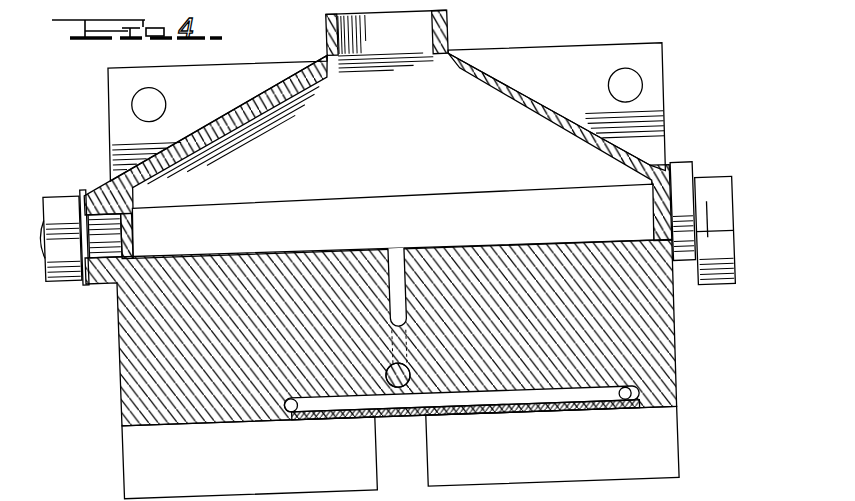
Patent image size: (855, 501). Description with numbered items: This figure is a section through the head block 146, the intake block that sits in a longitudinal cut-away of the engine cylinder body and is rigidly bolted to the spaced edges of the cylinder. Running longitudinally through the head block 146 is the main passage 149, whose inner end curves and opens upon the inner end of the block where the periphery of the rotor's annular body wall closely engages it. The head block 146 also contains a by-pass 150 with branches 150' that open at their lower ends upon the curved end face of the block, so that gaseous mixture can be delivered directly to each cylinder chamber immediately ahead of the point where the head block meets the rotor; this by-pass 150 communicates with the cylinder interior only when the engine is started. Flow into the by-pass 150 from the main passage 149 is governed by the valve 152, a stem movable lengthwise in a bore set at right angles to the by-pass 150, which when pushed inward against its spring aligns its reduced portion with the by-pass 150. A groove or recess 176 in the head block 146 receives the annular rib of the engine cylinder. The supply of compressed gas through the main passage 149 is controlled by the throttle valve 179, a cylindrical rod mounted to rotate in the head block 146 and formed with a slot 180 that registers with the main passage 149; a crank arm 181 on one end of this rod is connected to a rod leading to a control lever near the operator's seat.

The head block 146 is at (491, 72).
The main passage 149 is at (404, 284).
The by-pass 150 is at (463, 426).
The branches 150' is at (441, 429).
The valve 152 is at (392, 398).
The groove or recess 176 is at (419, 466).
The throttle valve 179 is at (149, 201).
The slot 180 is at (419, 199).
The crank arm 181 is at (736, 272).